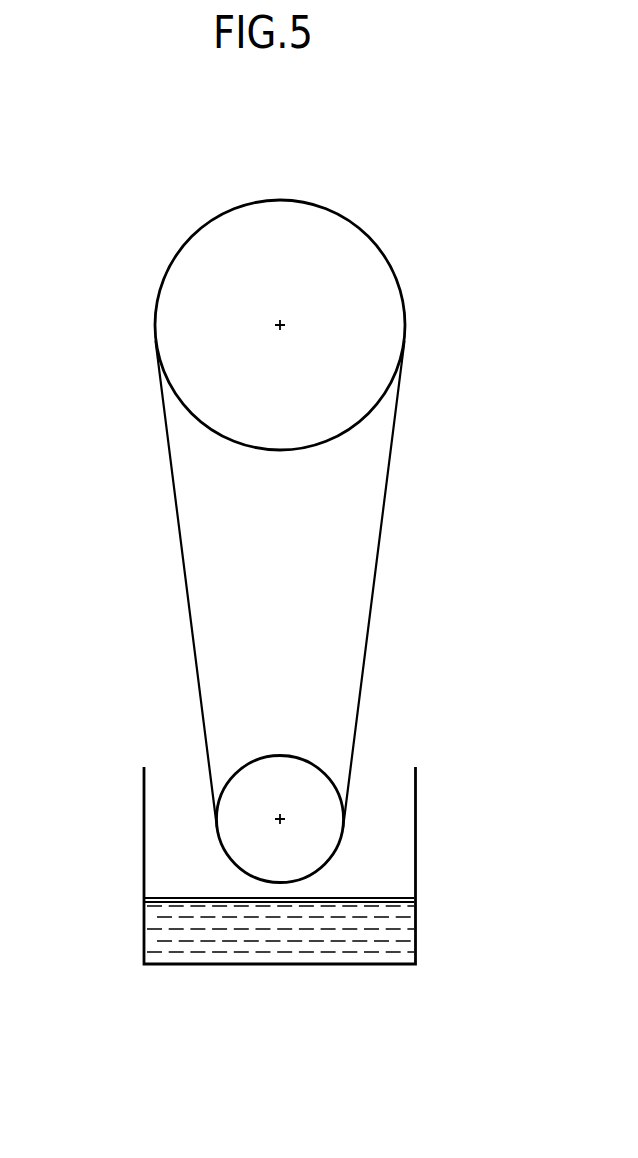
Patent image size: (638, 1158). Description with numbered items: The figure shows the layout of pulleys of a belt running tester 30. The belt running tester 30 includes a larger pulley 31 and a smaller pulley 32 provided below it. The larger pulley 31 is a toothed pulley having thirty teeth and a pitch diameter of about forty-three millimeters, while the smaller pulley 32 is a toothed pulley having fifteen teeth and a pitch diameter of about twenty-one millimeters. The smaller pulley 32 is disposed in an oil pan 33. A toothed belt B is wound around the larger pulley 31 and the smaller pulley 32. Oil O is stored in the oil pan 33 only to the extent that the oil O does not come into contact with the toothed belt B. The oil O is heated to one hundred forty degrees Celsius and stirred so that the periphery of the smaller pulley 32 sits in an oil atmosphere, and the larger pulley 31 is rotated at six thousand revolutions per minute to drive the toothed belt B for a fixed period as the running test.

The belt running tester 30 is at (472, 242).
The larger pulley 31 is at (175, 303).
The smaller pulley 32 is at (323, 827).
The oil pan 33 is at (144, 829).
The toothed belt B is at (375, 587).
The oil O is at (405, 925).